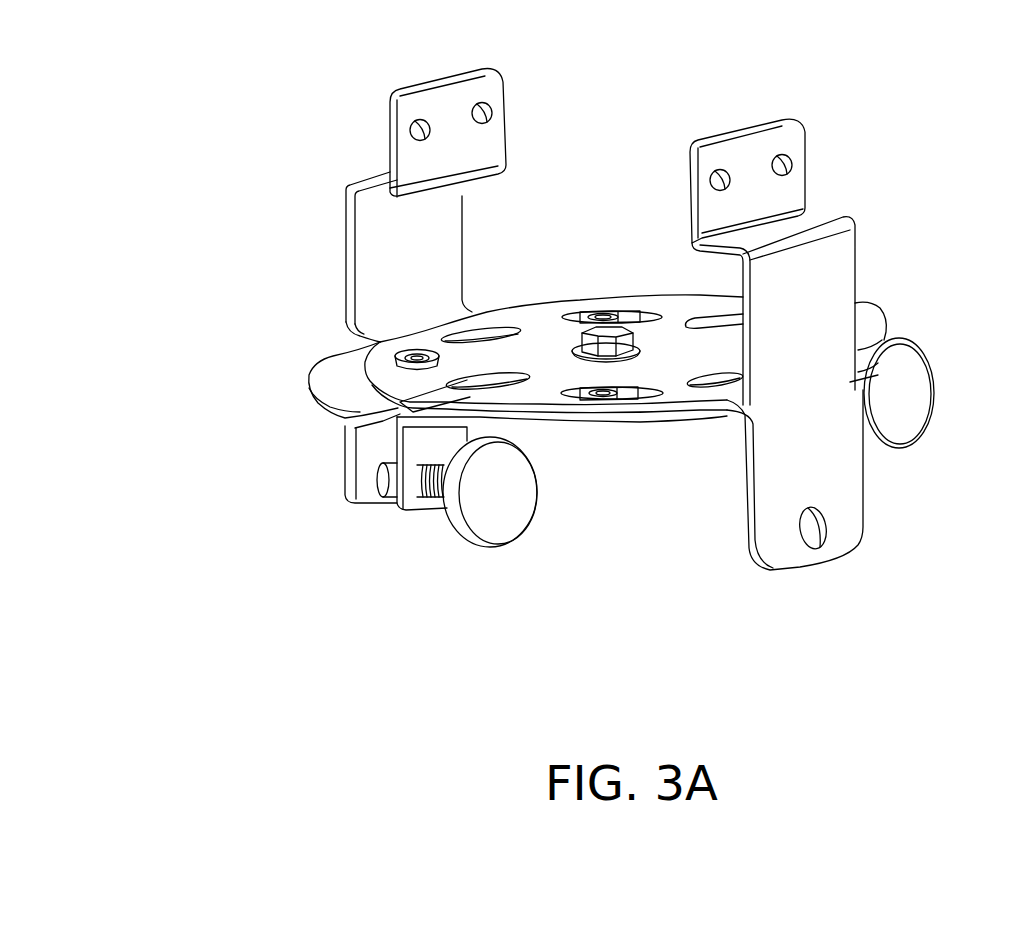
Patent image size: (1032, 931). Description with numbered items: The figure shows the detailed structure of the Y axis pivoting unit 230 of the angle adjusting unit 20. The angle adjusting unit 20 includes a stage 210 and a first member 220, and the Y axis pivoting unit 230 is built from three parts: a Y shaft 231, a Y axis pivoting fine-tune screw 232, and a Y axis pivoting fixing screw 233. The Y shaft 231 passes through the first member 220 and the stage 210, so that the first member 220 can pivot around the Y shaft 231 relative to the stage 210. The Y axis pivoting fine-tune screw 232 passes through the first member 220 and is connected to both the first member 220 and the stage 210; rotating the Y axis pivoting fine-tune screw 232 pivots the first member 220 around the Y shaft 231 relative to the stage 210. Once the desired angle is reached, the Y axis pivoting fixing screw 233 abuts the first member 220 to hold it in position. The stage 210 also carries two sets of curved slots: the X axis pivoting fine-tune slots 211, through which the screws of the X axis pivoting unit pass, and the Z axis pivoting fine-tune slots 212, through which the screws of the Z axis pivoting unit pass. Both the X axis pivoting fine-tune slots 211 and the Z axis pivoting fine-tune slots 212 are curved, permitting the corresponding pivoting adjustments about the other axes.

The angle adjusting unit 20 is at (190, 102).
The stage 210 is at (565, 340).
The X axis pivoting fine-tune slots 211 is at (703, 323).
The Z axis pivoting fine-tune slots 212 is at (490, 332).
The first member 220 is at (332, 372).
The Y axis pivoting unit 230 is at (947, 653).
The Y shaft 231 is at (597, 348).
The Y axis pivoting fine-tune screw 232 is at (897, 392).
The Y axis pivoting fixing screw 233 is at (510, 500).